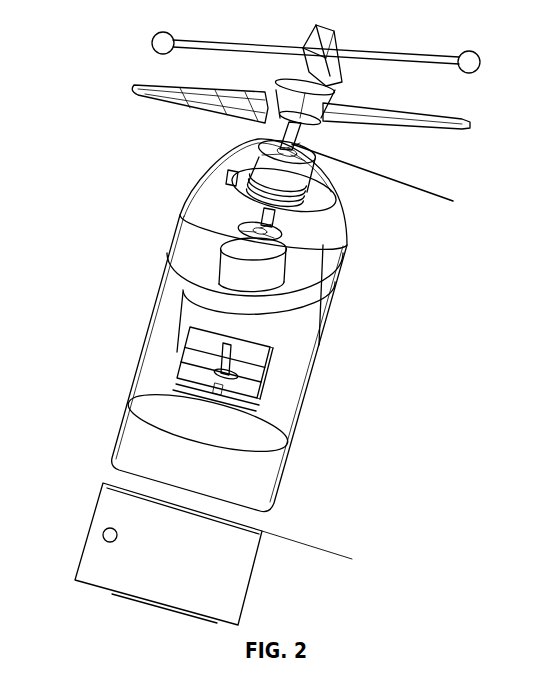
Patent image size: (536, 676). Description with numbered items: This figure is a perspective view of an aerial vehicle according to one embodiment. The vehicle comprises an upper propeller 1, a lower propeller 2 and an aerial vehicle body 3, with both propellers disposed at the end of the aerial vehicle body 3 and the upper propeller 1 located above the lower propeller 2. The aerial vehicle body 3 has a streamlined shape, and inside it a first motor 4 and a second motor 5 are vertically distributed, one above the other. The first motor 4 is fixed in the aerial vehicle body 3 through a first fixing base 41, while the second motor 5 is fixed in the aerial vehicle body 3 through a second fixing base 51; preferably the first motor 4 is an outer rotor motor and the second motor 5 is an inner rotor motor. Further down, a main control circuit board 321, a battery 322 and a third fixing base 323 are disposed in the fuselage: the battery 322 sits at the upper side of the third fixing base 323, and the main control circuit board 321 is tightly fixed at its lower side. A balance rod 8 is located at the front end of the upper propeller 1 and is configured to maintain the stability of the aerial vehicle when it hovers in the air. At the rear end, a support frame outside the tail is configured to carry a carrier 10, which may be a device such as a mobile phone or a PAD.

The upper propeller 1 is at (343, 23).
The lower propeller 2 is at (126, 80).
The aerial vehicle body 3 is at (445, 207).
The first motor 4 is at (254, 161).
The first fixing base 41 is at (215, 182).
The second motor 5 is at (226, 249).
The second fixing base 51 is at (173, 255).
The balance rod 8 is at (144, 36).
The carrier 10 is at (101, 505).
The main control circuit board 321 is at (164, 382).
The battery 322 is at (185, 339).
The third fixing base 323 is at (277, 364).